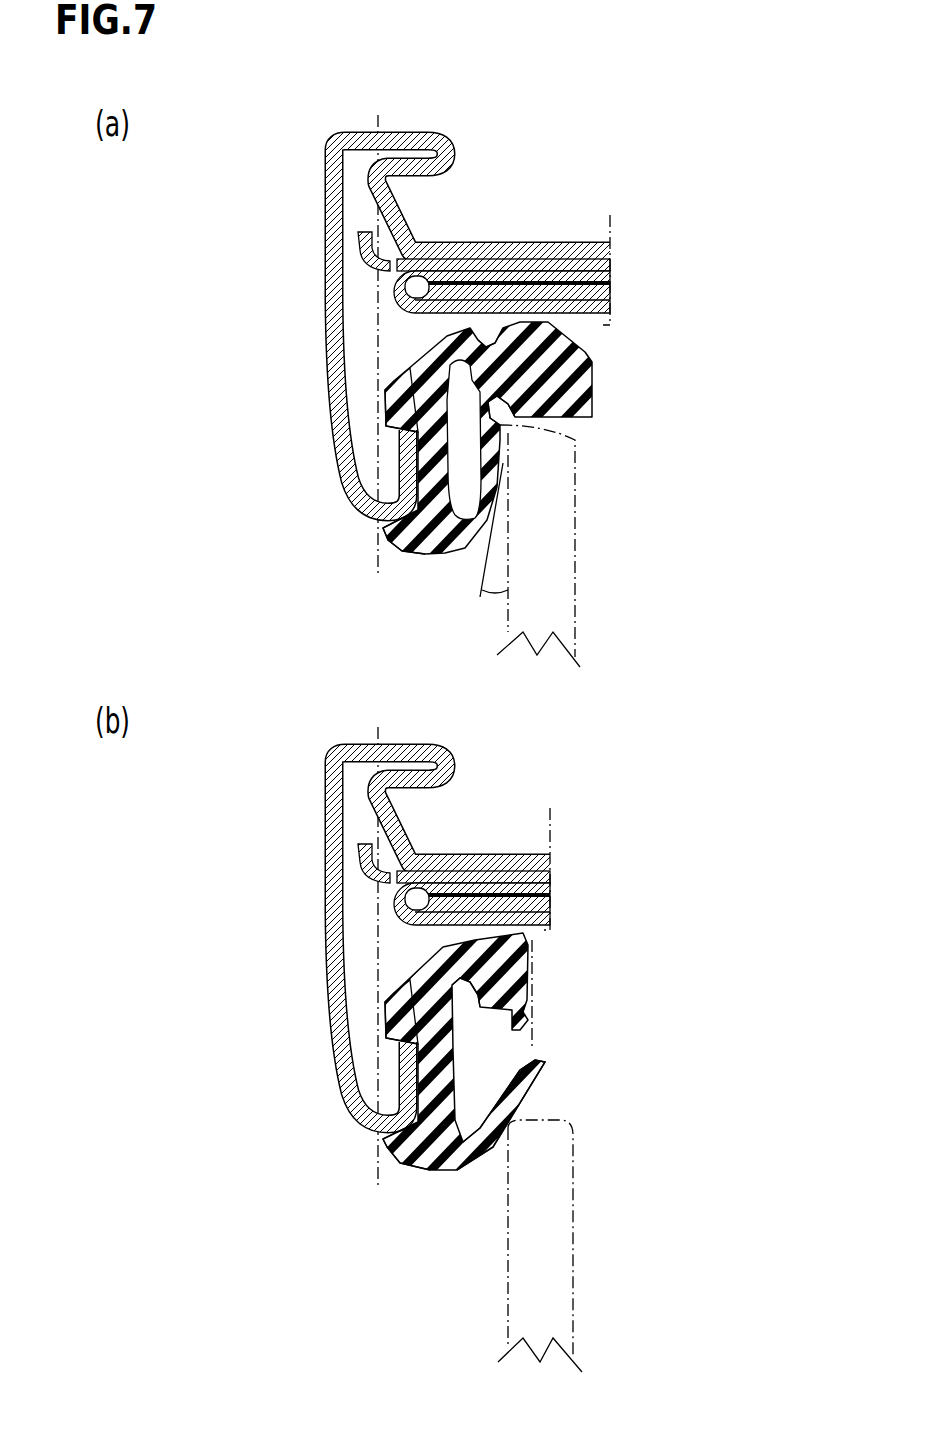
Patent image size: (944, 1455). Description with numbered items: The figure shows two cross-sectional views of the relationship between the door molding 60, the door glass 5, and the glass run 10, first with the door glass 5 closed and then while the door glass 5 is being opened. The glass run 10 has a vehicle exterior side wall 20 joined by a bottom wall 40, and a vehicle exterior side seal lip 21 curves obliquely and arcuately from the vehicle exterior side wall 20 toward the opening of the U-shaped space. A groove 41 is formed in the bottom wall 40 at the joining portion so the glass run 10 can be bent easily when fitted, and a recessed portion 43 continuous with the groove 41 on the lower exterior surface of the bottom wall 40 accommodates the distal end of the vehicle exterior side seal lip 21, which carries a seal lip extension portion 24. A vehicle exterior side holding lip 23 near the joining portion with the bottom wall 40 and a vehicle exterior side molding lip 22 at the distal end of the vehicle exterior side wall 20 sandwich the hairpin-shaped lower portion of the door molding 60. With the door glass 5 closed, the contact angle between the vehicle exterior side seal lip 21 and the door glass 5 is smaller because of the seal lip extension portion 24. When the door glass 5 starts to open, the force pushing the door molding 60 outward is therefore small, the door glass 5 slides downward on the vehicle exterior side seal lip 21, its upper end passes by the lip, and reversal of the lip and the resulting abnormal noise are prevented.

The door glass 5 is at (575, 627).
The glass run 10 is at (600, 378).
The vehicle exterior side wall 20 is at (428, 447).
The vehicle exterior side seal lip 21 is at (500, 517).
The vehicle exterior side molding lip 22 is at (385, 527).
The vehicle exterior side holding lip 23 is at (395, 388).
The seal lip extension portion 24 is at (495, 423).
The bottom wall 40 is at (567, 380).
The groove 41 is at (452, 365).
The recessed portion 43 is at (473, 390).
The door molding 60 is at (327, 270).